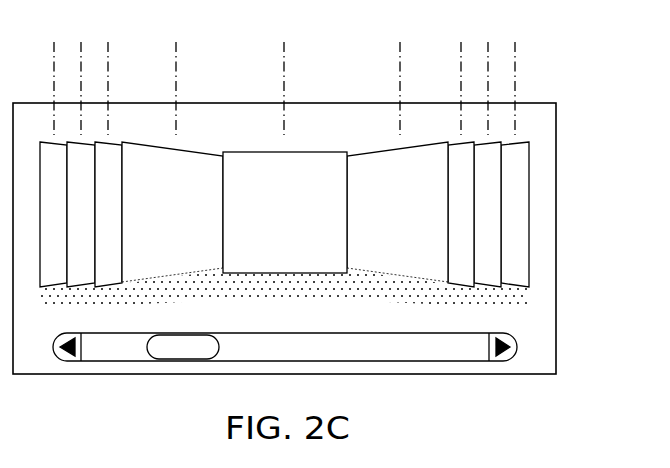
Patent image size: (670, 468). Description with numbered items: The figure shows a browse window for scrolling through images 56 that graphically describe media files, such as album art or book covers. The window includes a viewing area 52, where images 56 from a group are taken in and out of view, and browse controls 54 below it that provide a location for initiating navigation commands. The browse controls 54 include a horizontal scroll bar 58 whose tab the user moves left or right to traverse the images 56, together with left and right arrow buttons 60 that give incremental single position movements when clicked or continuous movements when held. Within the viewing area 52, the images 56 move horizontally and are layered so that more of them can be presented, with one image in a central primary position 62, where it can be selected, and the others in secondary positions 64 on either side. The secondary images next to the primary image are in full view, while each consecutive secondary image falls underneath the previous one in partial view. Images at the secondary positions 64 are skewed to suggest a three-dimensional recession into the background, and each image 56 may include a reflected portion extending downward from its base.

The viewing area 52 is at (542, 143).
The browse controls 54 is at (123, 361).
The images 56 is at (284, 224).
The horizontal scroll bar 58 is at (447, 352).
The left and right arrow buttons 60 is at (68, 361).
The primary position 62 is at (285, 75).
The secondary positions 64 is at (284, 75).